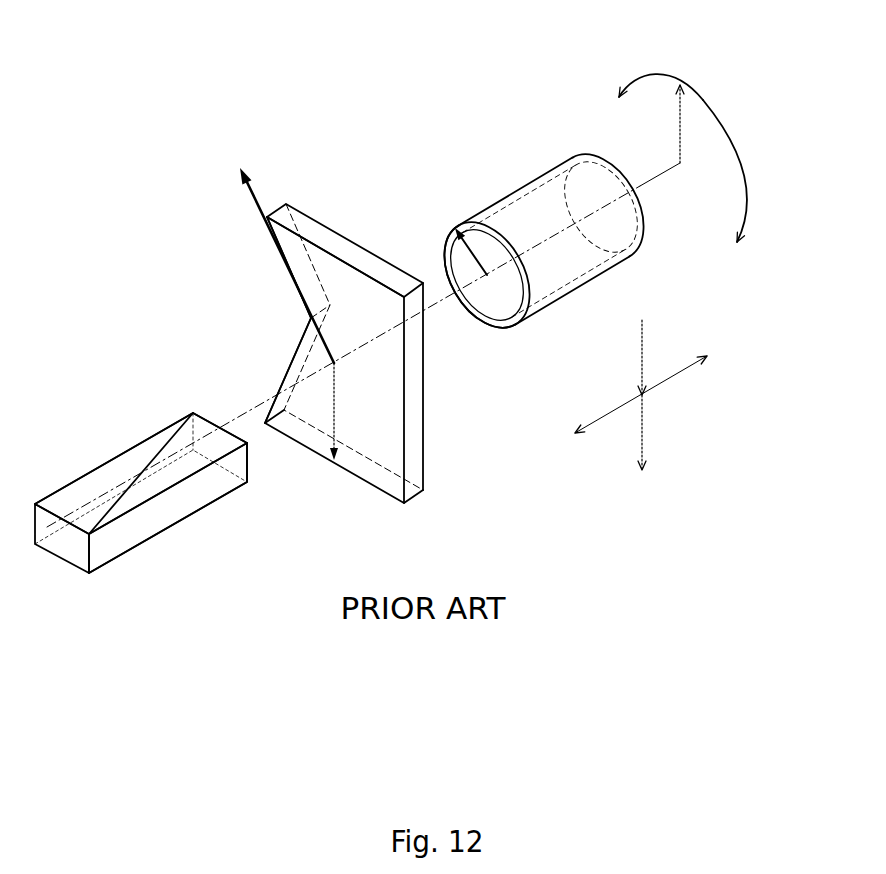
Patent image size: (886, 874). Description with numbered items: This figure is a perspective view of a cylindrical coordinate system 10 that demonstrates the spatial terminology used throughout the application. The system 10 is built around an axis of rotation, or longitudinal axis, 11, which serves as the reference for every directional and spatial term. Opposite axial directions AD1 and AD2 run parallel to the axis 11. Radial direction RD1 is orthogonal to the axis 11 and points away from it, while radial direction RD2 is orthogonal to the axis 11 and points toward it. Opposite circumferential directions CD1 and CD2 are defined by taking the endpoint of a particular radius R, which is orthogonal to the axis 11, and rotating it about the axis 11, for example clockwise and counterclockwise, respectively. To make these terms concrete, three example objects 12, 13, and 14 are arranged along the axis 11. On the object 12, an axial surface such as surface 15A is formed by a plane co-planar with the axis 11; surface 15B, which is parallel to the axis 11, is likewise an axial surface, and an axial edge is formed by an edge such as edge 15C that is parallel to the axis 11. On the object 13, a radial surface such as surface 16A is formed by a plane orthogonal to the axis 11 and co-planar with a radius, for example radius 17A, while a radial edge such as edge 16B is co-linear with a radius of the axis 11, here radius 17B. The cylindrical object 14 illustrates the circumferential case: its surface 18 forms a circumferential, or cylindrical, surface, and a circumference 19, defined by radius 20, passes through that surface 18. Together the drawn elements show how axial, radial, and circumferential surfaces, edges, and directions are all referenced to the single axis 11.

The cylindrical coordinate system 10 is at (215, 279).
The axis of rotation 11 is at (622, 190).
The object 12 is at (115, 571).
The object 13 is at (438, 497).
The object 14 is at (570, 309).
The axial surface 15A is at (110, 475).
The axial surface 15B is at (157, 522).
The axial edge 15C is at (135, 442).
The radial surface 16A is at (338, 277).
The radial edge 16B is at (290, 270).
The radius 17A is at (335, 408).
The radius 17B is at (250, 197).
The circumferential surface 18 is at (513, 190).
The circumference 19 is at (450, 250).
The radius 20 is at (448, 240).
The radius R is at (680, 118).
The circumferential direction CD1 is at (753, 210).
The circumferential direction CD2 is at (643, 73).
The radial direction RD1 is at (643, 443).
The radial direction RD2 is at (643, 337).
The axial direction AD1 is at (667, 377).
The axial direction AD2 is at (610, 413).